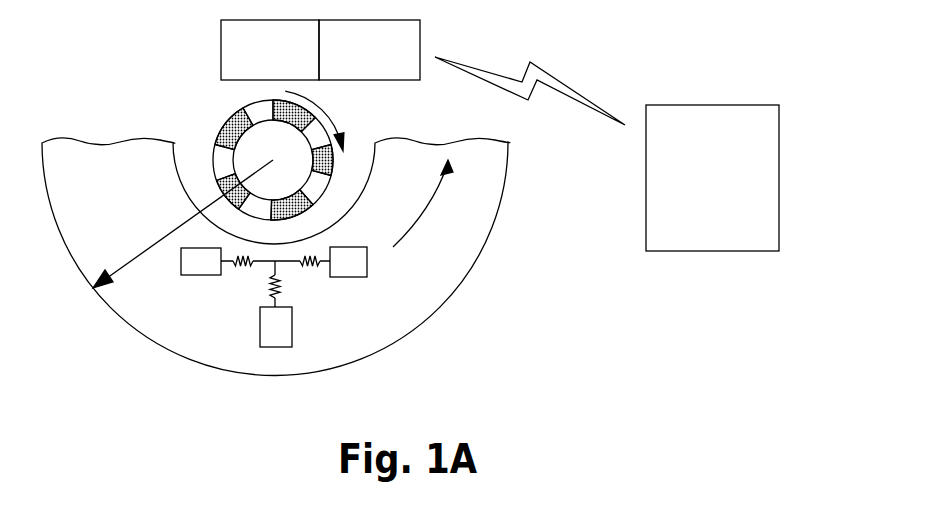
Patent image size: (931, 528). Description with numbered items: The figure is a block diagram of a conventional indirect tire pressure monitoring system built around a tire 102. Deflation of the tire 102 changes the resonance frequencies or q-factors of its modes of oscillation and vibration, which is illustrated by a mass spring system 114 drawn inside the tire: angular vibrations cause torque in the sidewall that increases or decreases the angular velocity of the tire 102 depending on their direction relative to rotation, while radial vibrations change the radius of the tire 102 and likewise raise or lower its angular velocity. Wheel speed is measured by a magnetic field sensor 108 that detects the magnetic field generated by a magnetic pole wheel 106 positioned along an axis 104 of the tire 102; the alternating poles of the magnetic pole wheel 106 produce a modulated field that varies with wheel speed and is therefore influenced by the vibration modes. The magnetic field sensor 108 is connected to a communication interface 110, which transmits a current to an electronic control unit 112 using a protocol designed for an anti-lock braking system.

The tire 102 is at (463, 283).
The axis 104 is at (157, 243).
The magnetic pole wheel 106 is at (209, 114).
The magnetic field sensor 108 is at (270, 50).
The communication interface 110 is at (369, 50).
The electronic control unit (ECU) 112 is at (607, 154).
The mass spring system 114 is at (329, 317).